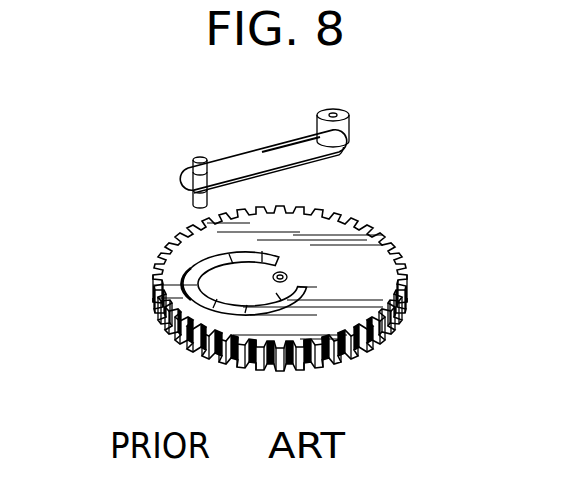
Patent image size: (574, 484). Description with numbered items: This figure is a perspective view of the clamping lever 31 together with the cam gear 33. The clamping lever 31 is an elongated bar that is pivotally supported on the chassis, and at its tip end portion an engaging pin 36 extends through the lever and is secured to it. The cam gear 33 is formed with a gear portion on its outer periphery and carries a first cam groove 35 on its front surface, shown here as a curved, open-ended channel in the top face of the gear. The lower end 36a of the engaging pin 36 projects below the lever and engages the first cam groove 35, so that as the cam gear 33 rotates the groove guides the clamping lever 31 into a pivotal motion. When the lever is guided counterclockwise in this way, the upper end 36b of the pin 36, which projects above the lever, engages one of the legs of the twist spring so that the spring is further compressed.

The clamping lever 31 is at (253, 145).
The cam gear 33 is at (390, 247).
The first cam groove 35 is at (188, 256).
The engaging pin 36 is at (185, 160).
The lower end 36a is at (193, 202).
The upper end 36b is at (183, 175).